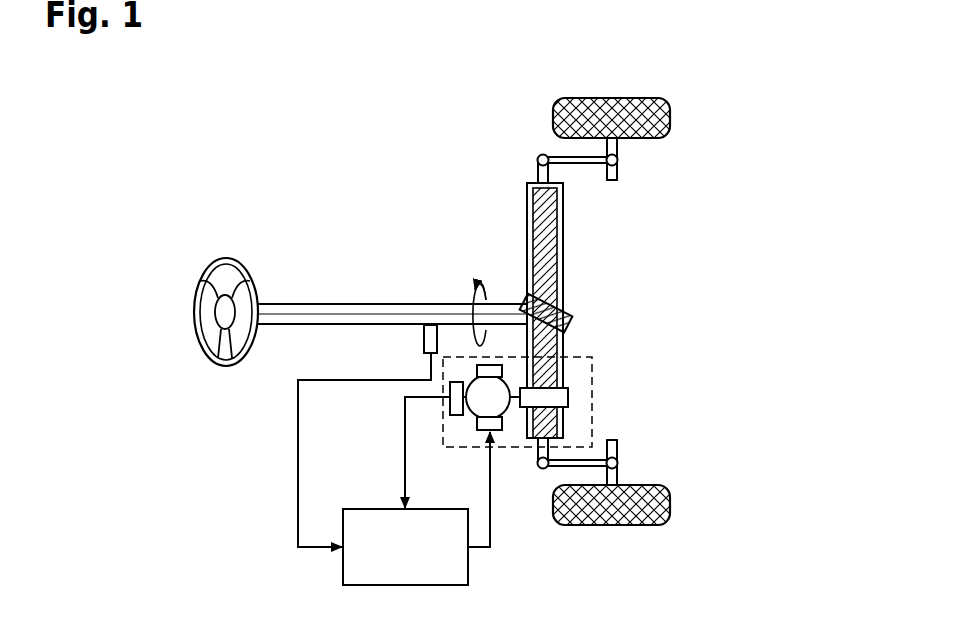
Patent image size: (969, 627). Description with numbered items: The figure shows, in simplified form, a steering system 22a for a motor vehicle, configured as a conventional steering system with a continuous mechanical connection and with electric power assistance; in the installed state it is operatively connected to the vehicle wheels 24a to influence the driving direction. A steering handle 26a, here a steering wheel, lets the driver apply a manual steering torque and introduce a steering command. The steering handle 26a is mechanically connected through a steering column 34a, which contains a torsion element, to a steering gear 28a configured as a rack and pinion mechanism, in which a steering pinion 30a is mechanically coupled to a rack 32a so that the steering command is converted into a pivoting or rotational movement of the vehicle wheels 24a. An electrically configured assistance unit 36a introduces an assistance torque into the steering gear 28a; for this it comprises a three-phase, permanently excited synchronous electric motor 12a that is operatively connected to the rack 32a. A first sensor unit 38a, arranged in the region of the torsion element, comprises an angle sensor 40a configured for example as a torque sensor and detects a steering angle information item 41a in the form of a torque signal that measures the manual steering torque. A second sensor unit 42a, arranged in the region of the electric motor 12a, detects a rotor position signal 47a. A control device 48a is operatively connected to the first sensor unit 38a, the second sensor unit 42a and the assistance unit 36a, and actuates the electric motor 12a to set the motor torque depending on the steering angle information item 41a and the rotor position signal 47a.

The electric motor 12a is at (465, 443).
The steering system 22a is at (765, 173).
The vehicle wheels 24a is at (670, 120).
The steering handle 26a is at (228, 258).
The steering gear 28a is at (530, 310).
The steering pinion 30a is at (570, 320).
The rack 32a is at (560, 239).
The steering column 34a is at (373, 302).
The assistance unit 36a is at (549, 398).
The first sensor unit 38a is at (417, 358).
The angle sensor 40a is at (421, 342).
The steering angle information item 41a is at (297, 468).
The second sensor unit 42a is at (447, 416).
The rotor position signal 47a is at (405, 437).
The control device 48a is at (470, 563).